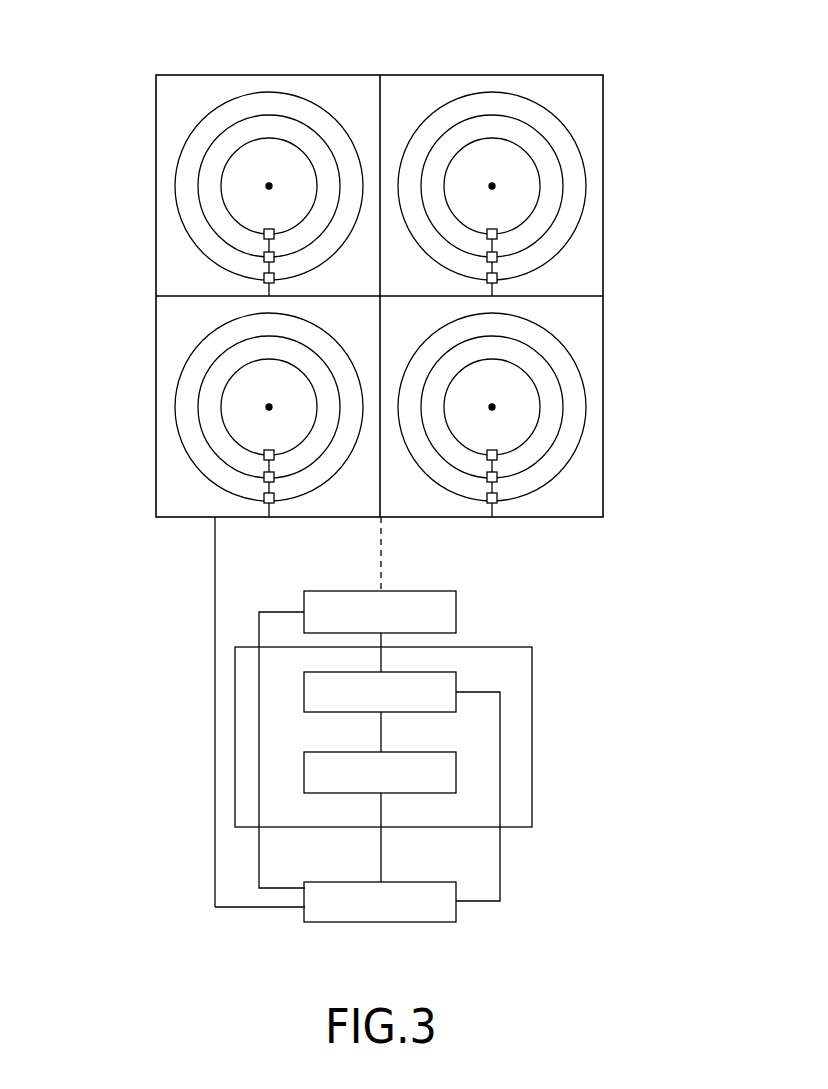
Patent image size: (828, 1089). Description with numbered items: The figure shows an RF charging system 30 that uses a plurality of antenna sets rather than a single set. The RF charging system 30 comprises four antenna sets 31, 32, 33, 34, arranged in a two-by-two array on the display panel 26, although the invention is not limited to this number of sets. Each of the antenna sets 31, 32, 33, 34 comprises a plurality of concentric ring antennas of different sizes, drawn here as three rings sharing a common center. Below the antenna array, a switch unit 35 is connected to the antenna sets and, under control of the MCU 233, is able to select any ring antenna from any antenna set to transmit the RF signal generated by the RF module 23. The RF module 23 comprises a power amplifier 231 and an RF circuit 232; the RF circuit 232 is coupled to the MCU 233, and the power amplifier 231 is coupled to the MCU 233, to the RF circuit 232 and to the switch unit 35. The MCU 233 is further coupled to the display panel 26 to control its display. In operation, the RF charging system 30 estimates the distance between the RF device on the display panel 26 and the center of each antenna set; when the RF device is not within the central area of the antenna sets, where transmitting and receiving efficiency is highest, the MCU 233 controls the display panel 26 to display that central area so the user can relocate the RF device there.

The display panel 26 is at (156, 220).
The antenna set 31 is at (197, 97).
The antenna set 33 is at (433, 97).
The antenna set 32 is at (168, 452).
The antenna set 34 is at (590, 457).
The switch unit 35 is at (456, 605).
The RF module 23 is at (532, 727).
The power amplifier 231 is at (445, 672).
The RF circuit 232 is at (420, 748).
The MCU 233 is at (410, 878).
The RF charging system 30 is at (185, 718).